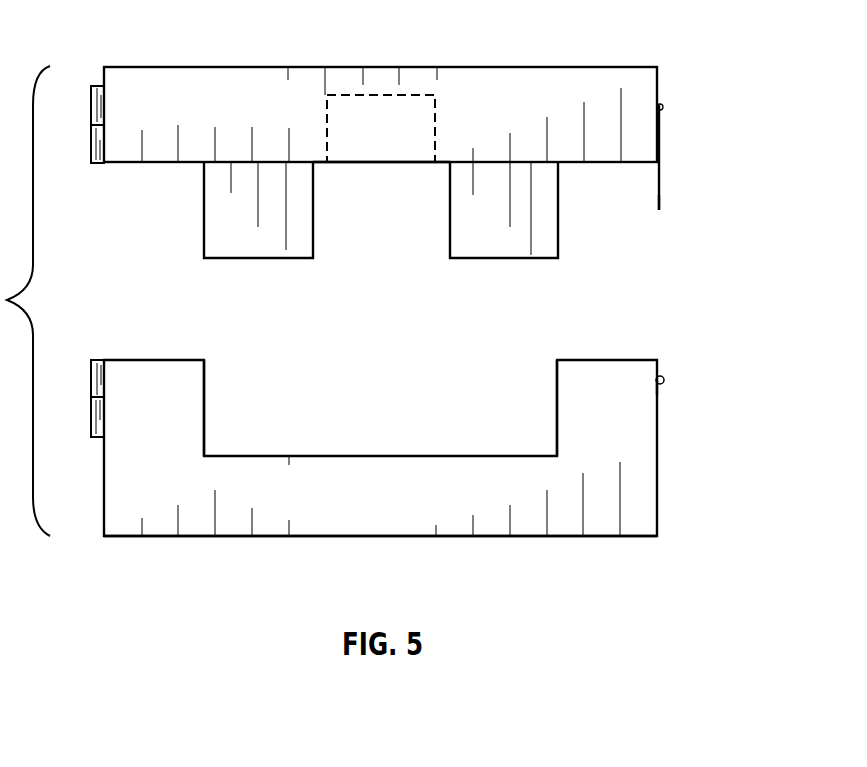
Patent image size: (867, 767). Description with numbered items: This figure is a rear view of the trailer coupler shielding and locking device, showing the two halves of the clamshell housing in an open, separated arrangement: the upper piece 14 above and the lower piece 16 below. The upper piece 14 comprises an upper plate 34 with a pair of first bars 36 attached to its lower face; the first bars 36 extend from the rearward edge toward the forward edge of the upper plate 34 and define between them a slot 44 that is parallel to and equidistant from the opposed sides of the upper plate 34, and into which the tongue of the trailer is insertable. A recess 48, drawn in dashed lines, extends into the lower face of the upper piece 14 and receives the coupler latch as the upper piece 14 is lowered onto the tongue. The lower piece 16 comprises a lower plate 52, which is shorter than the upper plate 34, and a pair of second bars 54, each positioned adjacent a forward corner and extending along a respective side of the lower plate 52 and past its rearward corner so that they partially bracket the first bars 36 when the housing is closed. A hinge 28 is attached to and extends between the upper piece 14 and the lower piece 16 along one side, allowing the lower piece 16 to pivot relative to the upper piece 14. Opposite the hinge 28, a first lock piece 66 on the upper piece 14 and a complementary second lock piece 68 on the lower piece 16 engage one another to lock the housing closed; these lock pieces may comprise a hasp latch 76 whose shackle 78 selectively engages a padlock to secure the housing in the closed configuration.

The upper piece 14 is at (593, 67).
The lower piece 16 is at (658, 490).
The hinge 28 is at (97, 167).
The upper plate 34 is at (507, 84).
The first bars 36 is at (297, 216).
The slot 44 is at (367, 178).
The recess 48 is at (406, 130).
The lower plate 52 is at (277, 511).
The second bars 54 is at (210, 411).
The first lock piece 66 is at (666, 148).
The second lock piece 68 is at (669, 381).
The hasp latch 76 is at (660, 210).
The shackle 78 is at (663, 388).